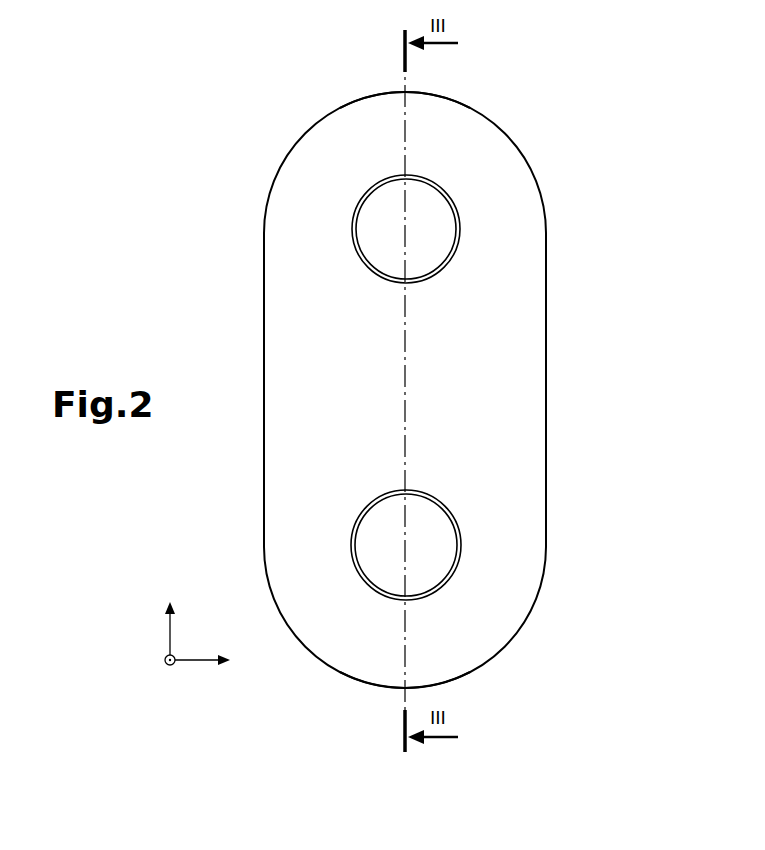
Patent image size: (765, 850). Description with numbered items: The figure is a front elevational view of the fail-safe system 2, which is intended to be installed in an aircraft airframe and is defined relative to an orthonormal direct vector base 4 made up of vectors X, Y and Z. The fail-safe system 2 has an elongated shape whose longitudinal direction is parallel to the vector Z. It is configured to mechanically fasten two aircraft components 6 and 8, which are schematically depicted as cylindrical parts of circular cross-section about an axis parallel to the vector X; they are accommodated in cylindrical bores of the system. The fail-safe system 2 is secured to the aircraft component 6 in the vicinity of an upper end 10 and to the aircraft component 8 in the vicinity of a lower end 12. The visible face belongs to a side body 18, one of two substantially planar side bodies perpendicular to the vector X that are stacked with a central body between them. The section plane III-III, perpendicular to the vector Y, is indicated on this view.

The fail-safe system 2 is at (236, 172).
The orthonormal direct vector base 4 is at (122, 617).
The aircraft component 6 is at (375, 247).
The aircraft component 8 is at (430, 522).
The upper end 10 is at (366, 97).
The lower end 12 is at (366, 684).
The side body 18 is at (357, 450).